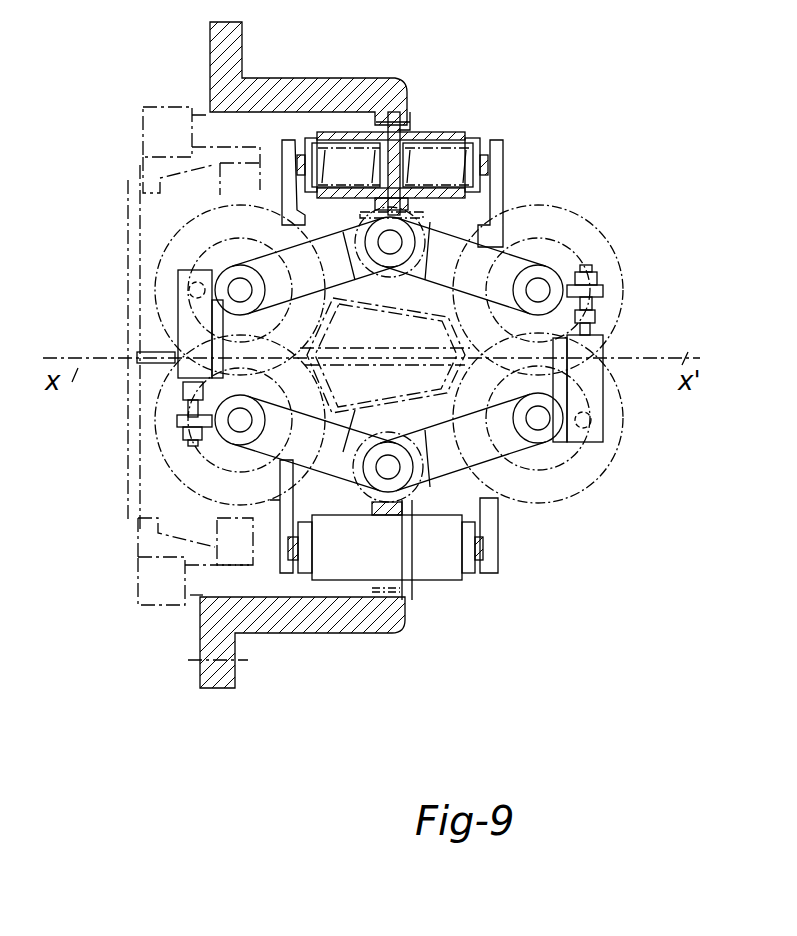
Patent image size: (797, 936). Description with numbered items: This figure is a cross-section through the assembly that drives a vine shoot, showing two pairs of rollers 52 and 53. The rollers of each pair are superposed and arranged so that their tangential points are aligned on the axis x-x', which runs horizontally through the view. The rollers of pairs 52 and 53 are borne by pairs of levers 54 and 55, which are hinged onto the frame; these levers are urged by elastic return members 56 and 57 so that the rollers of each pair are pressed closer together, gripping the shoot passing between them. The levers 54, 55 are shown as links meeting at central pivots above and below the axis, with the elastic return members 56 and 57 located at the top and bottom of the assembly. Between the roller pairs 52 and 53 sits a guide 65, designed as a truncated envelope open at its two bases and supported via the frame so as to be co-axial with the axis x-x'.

The pair of rollers 52 is at (238, 515).
The pair of rollers 53 is at (625, 265).
The pair of levers 54 is at (235, 247).
The pair of levers 55 is at (505, 245).
The elastic return member 56 is at (435, 140).
The elastic return member 57 is at (533, 170).
The guide 65 is at (385, 355).